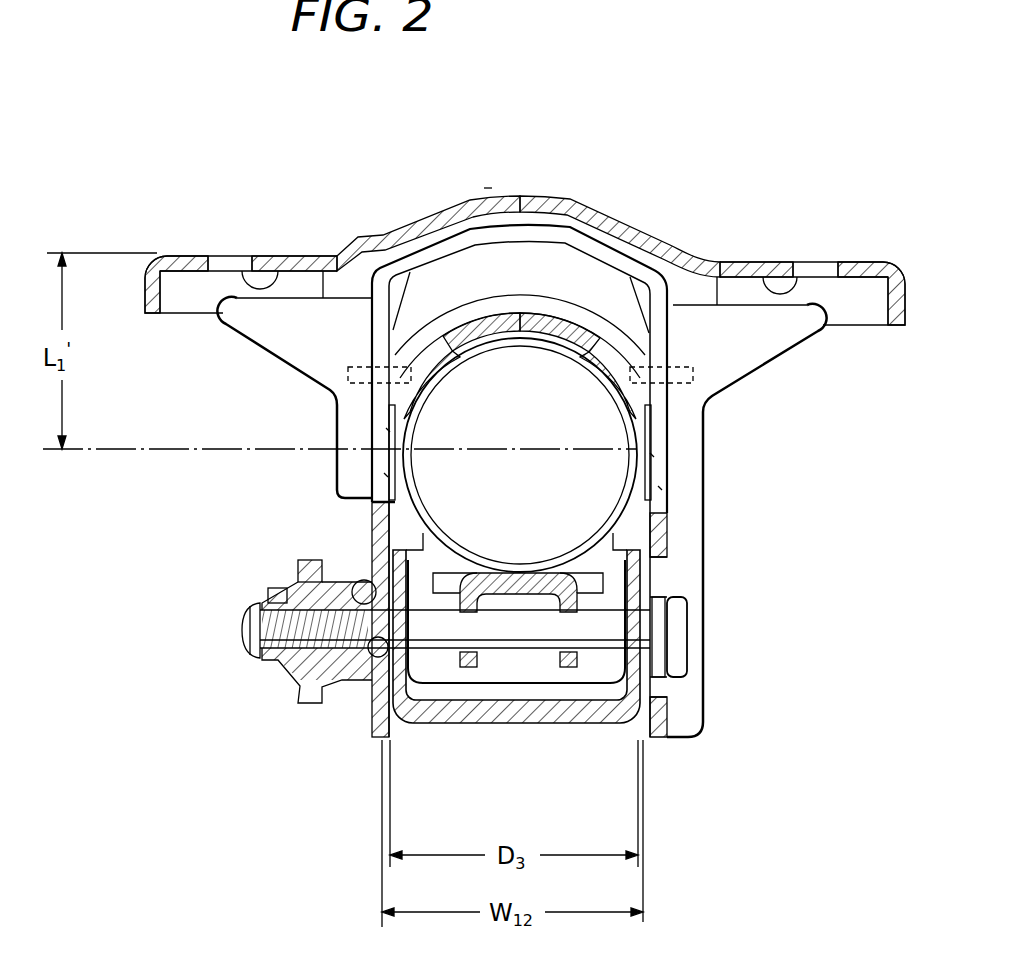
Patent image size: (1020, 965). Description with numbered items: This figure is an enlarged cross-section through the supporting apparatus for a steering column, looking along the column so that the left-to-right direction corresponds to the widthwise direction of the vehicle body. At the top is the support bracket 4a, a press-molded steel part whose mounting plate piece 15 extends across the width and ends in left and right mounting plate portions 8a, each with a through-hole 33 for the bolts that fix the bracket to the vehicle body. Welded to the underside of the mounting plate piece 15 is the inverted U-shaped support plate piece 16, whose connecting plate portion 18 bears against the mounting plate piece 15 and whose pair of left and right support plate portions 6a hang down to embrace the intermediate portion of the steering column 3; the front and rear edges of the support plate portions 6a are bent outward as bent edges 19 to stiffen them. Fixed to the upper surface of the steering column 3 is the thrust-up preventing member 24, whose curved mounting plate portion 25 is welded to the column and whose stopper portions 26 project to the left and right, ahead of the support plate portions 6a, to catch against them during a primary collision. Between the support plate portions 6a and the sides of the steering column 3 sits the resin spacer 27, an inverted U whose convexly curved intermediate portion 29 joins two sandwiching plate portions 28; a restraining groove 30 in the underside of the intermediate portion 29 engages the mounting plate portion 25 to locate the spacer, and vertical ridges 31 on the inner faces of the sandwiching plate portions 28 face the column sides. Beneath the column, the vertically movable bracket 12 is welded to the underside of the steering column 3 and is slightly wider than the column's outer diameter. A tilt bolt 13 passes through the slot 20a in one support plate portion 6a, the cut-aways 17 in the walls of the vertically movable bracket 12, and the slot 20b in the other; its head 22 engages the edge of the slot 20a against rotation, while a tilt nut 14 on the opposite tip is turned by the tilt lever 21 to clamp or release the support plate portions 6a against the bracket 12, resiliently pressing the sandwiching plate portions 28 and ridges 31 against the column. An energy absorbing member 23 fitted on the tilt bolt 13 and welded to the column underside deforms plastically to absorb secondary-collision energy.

The support bracket 4a is at (487, 184).
The mounting plate piece 15 is at (462, 212).
The support plate piece 16 is at (370, 320).
The spacer 27 is at (424, 218).
The intermediate portion 29 is at (502, 214).
The restraining groove 30 is at (541, 226).
The connecting plate portion 18 is at (575, 243).
The thrust-up preventing member 24 is at (596, 260).
The mounting plate portion 25 is at (632, 238).
The mounting plate portions 8a is at (190, 256).
The through-holes 33 is at (222, 256).
The stopper portions 26 is at (348, 366).
The bent edges 19 is at (335, 404).
The sandwiching plate portions 28 is at (388, 430).
The ridges 31 is at (394, 448).
The support plate portions 6a is at (386, 475).
The steering column 3 is at (410, 480).
The energy absorbing member 23 is at (512, 578).
The slot 20b is at (362, 578).
The cut-aways 17 is at (655, 627).
The head 22 is at (680, 638).
The slot 20a is at (668, 706).
The tilt lever 21 is at (300, 700).
The tilt nut 14 is at (332, 700).
The tilt bolt 13 is at (447, 645).
The vertically movable bracket 12 is at (575, 728).